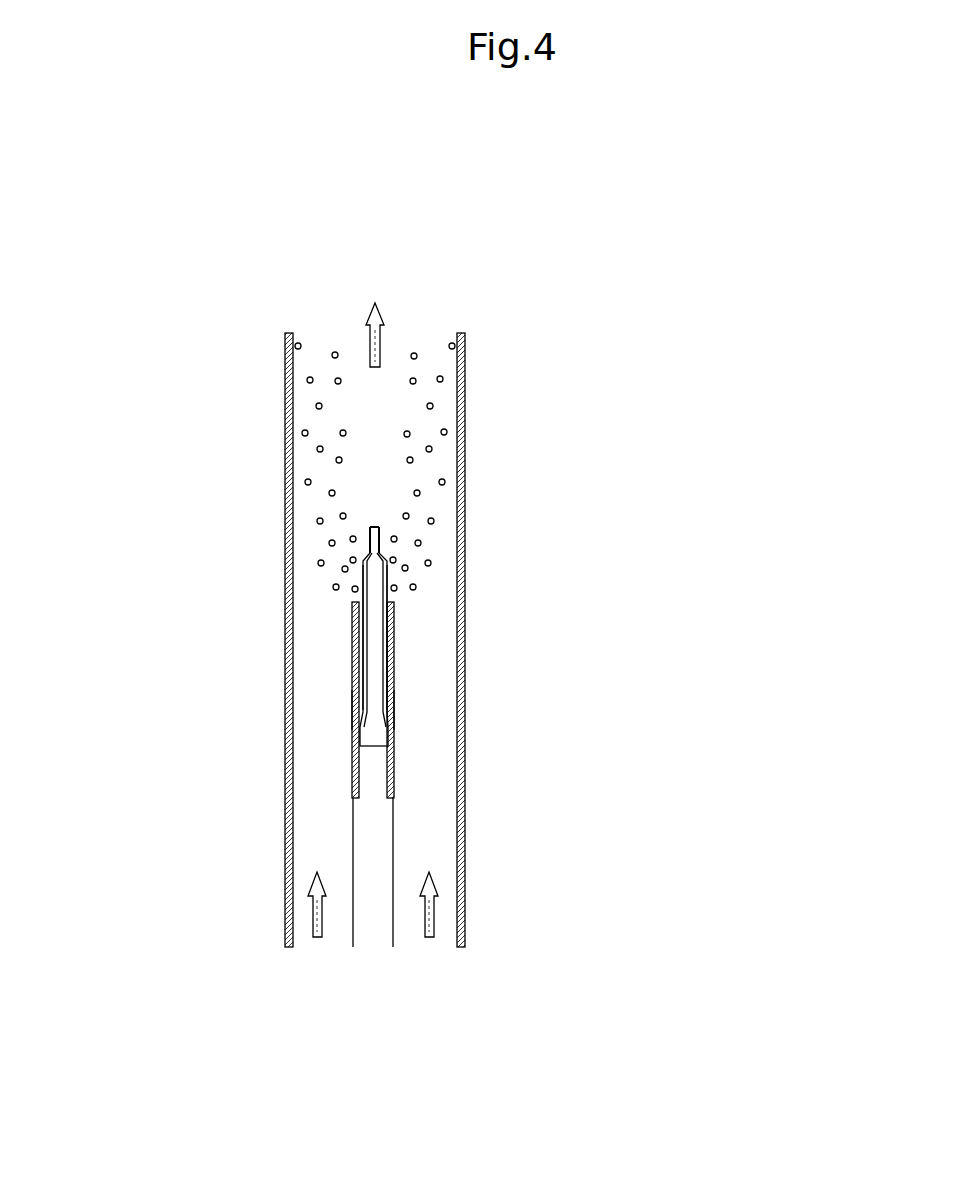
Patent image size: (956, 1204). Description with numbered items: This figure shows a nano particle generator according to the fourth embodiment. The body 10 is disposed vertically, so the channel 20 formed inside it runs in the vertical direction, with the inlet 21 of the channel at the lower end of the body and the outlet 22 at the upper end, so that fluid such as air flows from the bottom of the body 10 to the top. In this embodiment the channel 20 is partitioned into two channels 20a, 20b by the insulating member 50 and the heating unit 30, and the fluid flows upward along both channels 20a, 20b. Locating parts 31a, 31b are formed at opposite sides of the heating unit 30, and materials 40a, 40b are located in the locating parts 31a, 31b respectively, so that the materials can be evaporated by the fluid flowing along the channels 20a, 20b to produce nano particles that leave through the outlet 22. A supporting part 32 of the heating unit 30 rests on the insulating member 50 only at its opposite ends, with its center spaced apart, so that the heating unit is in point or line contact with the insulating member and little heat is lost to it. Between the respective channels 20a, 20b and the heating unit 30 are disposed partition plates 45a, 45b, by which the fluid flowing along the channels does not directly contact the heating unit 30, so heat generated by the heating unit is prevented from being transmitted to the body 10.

The body 10 is at (285, 823).
The channel 20 is at (495, 872).
The channel 20a is at (340, 838).
The channel 20b is at (423, 826).
The inlet 21 is at (412, 939).
The outlet 22 is at (415, 323).
The heating unit 30 is at (383, 527).
The locating part 31a is at (365, 599).
The locating part 31b is at (383, 583).
The supporting part 32 is at (375, 735).
The material 40a is at (352, 628).
The material 40b is at (395, 628).
The partition plate 45a is at (353, 708).
The partition plate 45b is at (394, 705).
The insulating member 50 is at (377, 922).